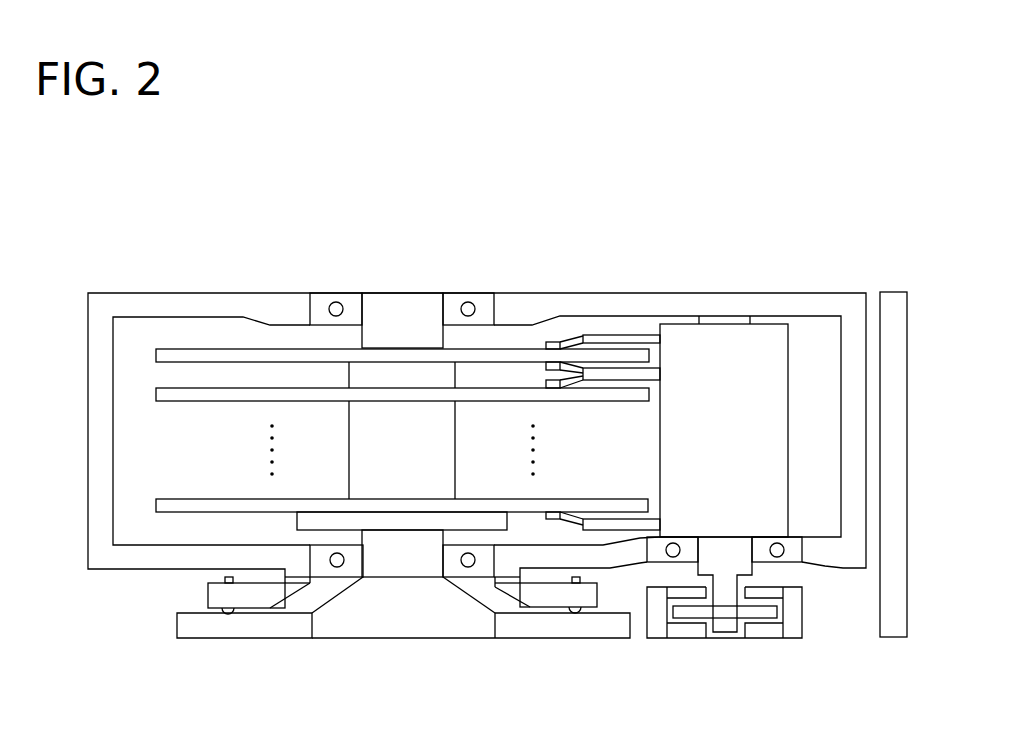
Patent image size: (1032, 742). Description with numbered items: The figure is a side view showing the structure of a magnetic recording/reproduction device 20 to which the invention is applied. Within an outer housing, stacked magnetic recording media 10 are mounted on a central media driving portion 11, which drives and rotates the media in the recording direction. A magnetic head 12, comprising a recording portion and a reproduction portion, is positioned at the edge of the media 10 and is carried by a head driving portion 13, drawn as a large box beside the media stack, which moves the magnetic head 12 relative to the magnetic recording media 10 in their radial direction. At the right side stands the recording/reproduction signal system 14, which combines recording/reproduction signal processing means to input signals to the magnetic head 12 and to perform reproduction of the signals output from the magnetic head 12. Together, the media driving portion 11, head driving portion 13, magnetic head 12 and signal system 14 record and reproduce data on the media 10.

The magnetic recording/reproduction device 20 is at (142, 264).
The magnetic recording media 10 is at (202, 357).
The media driving portion 11 is at (403, 553).
The magnetic head 12 is at (553, 342).
The head driving portion 13 is at (722, 348).
The recording/reproduction signal system 14 is at (893, 627).